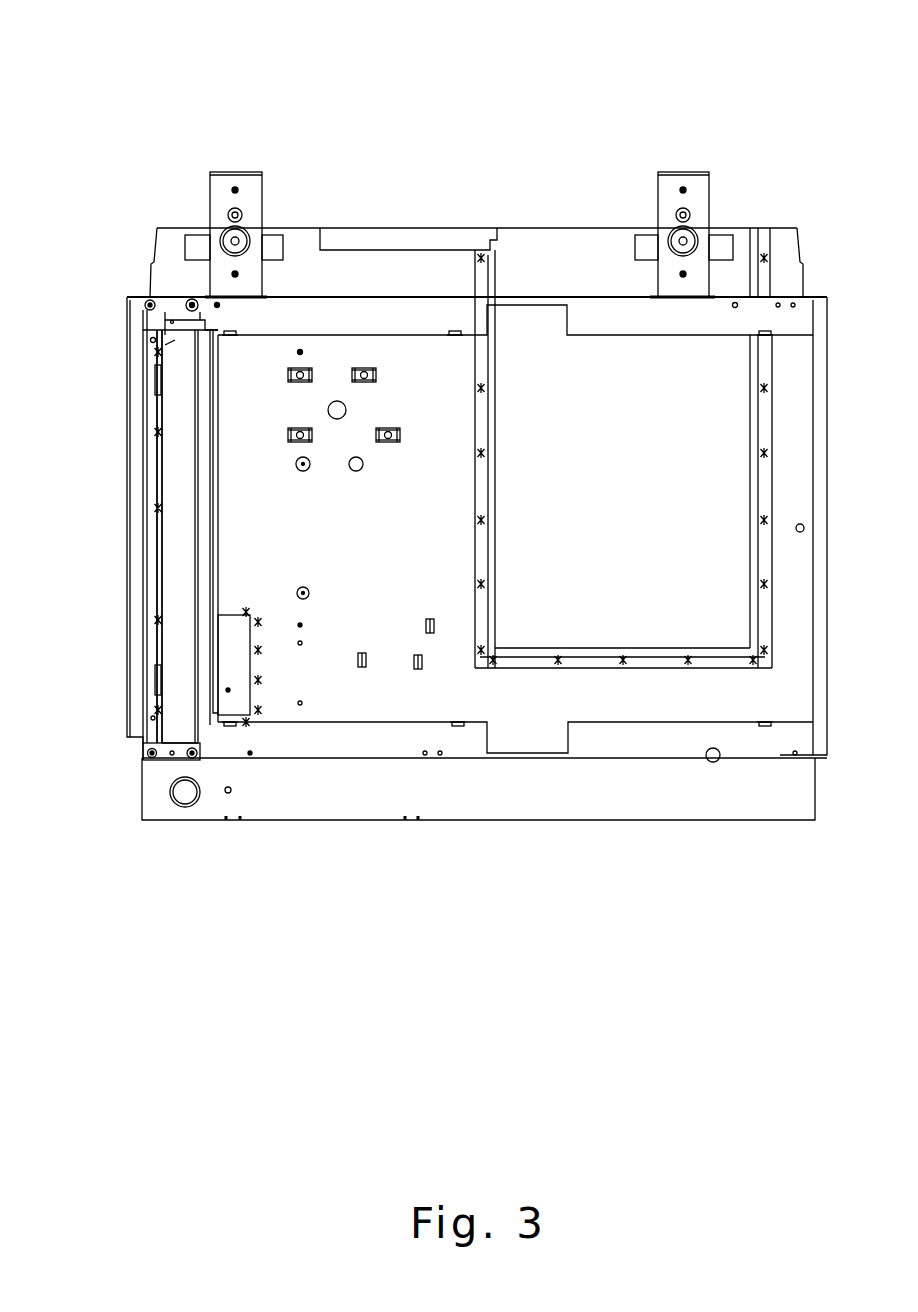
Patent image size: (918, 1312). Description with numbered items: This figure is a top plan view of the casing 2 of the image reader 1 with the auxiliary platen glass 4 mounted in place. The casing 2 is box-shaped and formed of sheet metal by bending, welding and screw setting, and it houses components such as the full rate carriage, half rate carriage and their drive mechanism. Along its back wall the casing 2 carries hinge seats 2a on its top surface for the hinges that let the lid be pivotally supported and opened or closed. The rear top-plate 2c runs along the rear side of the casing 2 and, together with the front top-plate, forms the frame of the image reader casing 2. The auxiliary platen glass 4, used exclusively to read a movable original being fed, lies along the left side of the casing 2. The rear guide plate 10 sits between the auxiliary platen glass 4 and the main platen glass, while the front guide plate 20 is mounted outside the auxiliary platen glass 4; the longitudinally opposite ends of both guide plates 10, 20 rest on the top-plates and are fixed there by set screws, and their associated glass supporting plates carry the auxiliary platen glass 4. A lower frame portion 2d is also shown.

The image reader 1 is at (518, 215).
The casing 2 is at (795, 688).
The hinge seats 2a is at (232, 188).
The rear top-plate 2c is at (360, 318).
The lower frame portion 2d is at (350, 748).
The auxiliary platen glass 4 is at (118, 310).
The rear guide plate 10 is at (205, 541).
The front guide plate 20 is at (155, 513).